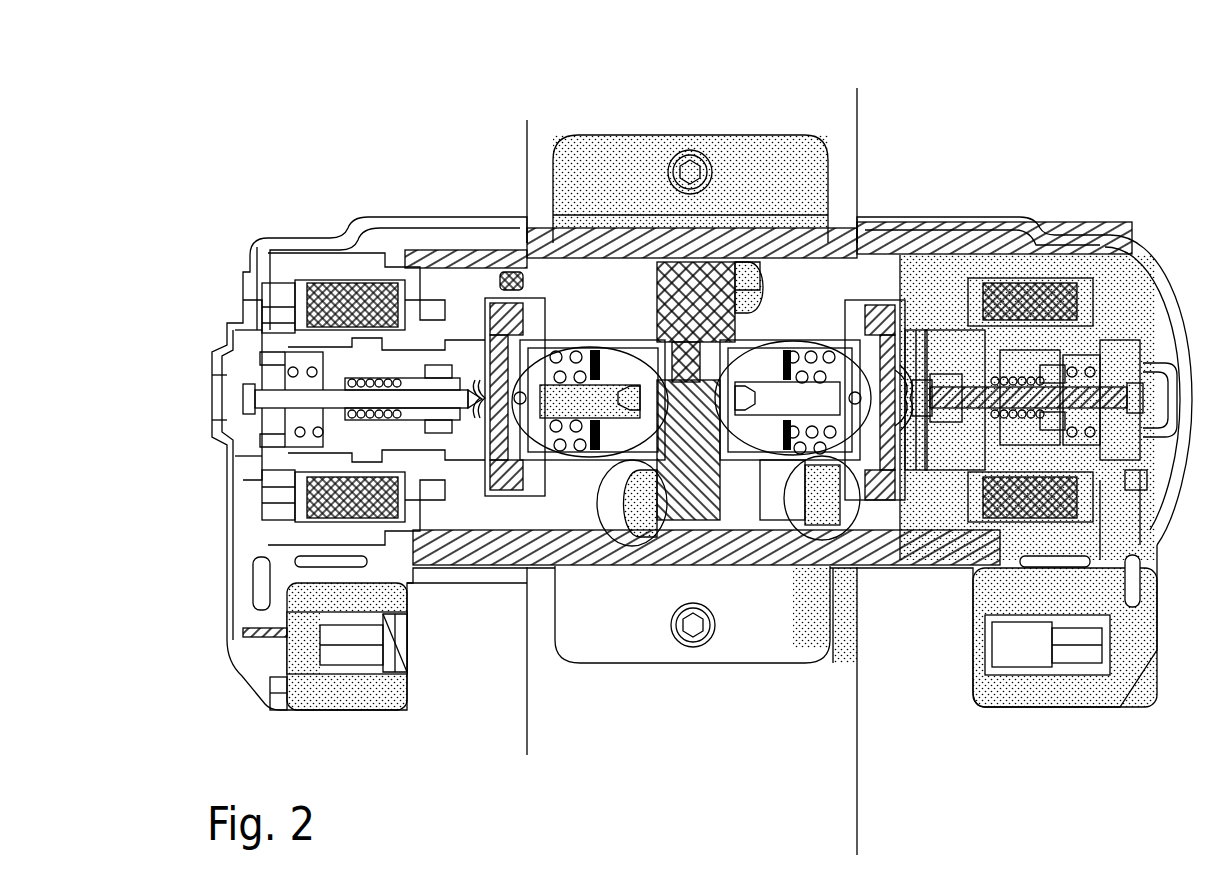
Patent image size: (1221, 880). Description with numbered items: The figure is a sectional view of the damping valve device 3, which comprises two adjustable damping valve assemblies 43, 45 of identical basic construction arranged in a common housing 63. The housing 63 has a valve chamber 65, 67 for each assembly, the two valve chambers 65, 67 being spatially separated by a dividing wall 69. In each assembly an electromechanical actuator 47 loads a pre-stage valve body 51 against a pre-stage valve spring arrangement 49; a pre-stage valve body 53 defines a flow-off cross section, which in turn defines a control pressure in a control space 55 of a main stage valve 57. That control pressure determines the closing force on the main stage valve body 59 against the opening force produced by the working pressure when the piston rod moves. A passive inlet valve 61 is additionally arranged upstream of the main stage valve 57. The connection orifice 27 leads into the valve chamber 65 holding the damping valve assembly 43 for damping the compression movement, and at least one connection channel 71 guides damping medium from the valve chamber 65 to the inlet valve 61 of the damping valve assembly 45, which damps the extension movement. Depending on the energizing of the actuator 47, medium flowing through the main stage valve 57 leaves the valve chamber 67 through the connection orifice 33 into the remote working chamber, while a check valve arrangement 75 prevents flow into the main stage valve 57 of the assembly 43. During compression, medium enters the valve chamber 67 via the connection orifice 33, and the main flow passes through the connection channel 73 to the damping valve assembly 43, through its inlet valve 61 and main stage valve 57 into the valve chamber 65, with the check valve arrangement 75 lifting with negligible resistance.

The damping valve device 3 is at (868, 72).
The connection orifice 27 is at (748, 258).
The connection orifice 33 is at (643, 522).
The damping valve assembly 43 is at (1052, 172).
The damping valve assembly 45 is at (426, 182).
The electromechanical actuator 47 is at (1170, 305).
The pre-stage valve spring arrangement 49 is at (1023, 373).
The pre-stage valve body 51 is at (917, 350).
The pre-stage valve body 53 is at (933, 433).
The control space 55 is at (900, 353).
The main stage valve 57 is at (812, 508).
The main stage valve body 59 is at (807, 513).
The passive inlet valve 61 is at (513, 433).
The housing 63 is at (735, 235).
The valve chamber 65 is at (787, 258).
The valve chamber 67 is at (587, 537).
The dividing wall 69 is at (680, 507).
The connection channel 71 is at (660, 300).
The connection channel 73 is at (733, 523).
The check valve arrangement 75 is at (615, 755).